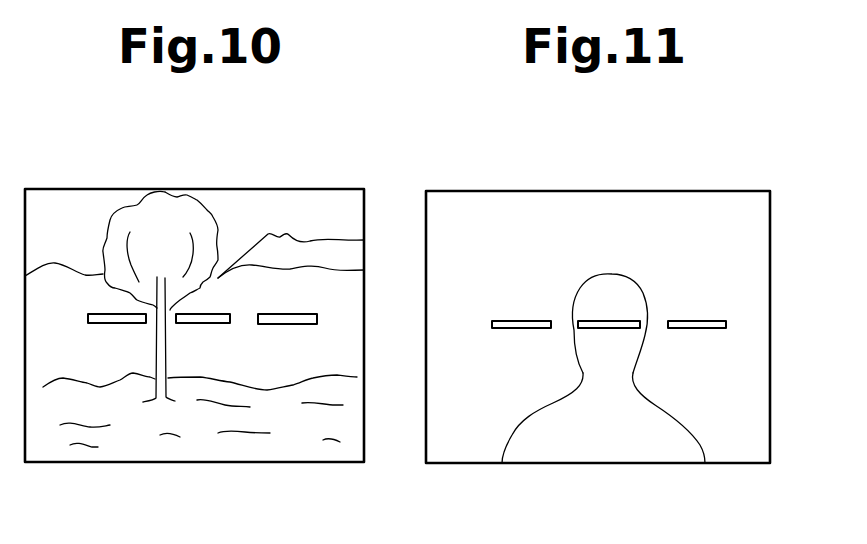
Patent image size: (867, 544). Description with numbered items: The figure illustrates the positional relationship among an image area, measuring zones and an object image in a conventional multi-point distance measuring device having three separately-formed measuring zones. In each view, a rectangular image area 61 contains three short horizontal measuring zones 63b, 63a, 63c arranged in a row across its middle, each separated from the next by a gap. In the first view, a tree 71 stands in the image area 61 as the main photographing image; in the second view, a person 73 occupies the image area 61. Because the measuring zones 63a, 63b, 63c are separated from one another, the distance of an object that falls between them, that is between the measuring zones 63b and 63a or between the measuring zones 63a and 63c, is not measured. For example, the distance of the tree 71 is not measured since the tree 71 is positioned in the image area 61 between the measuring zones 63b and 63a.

In FIG. 10, the image area 61 is at (287, 189).
In FIG. 11, the image area 61 is at (692, 191).
In FIG. 10, the tree 71 is at (165, 212).
In FIG. 11, the person 73 is at (590, 301).
In FIG. 10, the measuring zone 63a is at (199, 323).
In FIG. 11, the measuring zone 63a is at (614, 328).
In FIG. 10, the measuring zone 63b is at (117, 323).
In FIG. 11, the measuring zone 63b is at (524, 328).
In FIG. 10, the measuring zone 63c is at (290, 324).
In FIG. 11, the measuring zone 63c is at (698, 328).